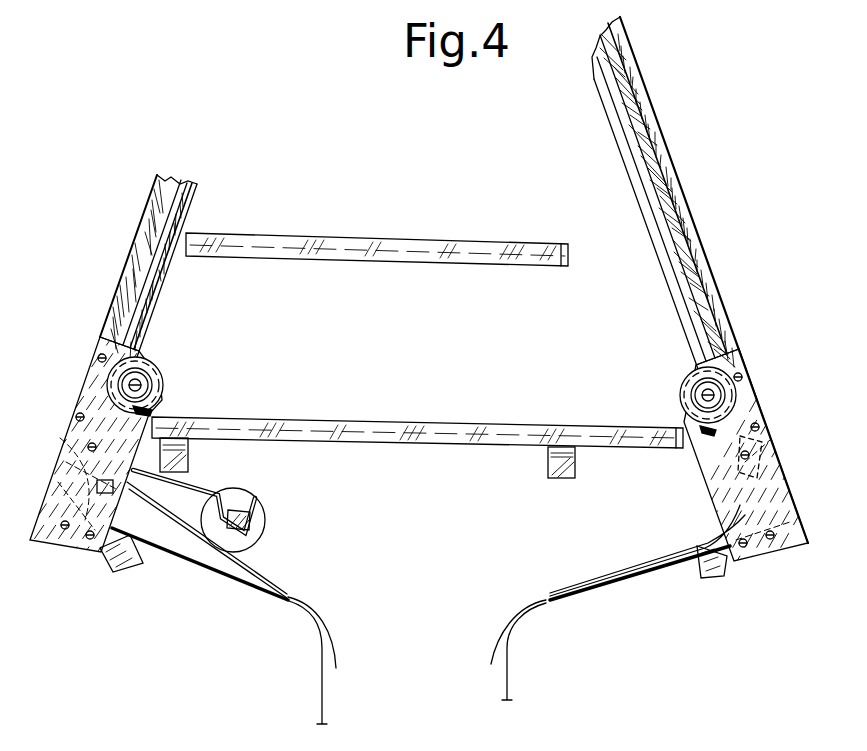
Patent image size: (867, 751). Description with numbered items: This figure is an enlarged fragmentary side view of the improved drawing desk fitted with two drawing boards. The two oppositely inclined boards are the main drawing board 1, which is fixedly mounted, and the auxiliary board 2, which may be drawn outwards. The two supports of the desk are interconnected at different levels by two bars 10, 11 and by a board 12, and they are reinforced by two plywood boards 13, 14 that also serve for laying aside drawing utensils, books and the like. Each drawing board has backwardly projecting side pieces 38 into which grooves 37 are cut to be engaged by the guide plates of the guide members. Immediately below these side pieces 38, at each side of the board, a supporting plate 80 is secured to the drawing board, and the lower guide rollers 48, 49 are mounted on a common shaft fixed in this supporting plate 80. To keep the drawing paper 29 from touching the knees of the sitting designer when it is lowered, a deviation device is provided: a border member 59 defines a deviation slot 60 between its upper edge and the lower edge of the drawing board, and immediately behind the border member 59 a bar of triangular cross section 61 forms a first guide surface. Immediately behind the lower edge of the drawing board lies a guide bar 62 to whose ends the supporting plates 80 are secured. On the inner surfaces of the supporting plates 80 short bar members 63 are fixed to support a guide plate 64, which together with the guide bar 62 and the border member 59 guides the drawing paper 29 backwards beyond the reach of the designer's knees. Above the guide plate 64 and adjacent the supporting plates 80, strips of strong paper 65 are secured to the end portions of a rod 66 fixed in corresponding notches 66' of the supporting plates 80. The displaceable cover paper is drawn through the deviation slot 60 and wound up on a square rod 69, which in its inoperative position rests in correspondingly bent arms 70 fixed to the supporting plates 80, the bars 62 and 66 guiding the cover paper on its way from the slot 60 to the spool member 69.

The main drawing board 1 is at (115, 318).
The auxiliary board 2 is at (658, 163).
The bar 10 is at (182, 455).
The bar 11 is at (557, 480).
The board 12 is at (520, 268).
The plywood board 13 is at (307, 248).
The plywood board 14 is at (282, 418).
The drawing paper 29 is at (125, 265).
The grooves 37 is at (152, 277).
The backwardly projecting side pieces 38 is at (132, 303).
The lower guide roller 48 is at (163, 370).
The lower guide roller 49 is at (421, 390).
The border member 59 is at (768, 452).
The deviation slot 60 is at (772, 477).
The bar of triangular cross section 61 is at (778, 503).
The guide bar 62 is at (77, 435).
The short bar members 63 is at (122, 557).
The guide plate 64 is at (225, 575).
The strips of strong paper 65 is at (325, 623).
The rod 66 is at (206, 499).
The notches 66' is at (105, 486).
The square rod 69 is at (250, 518).
The bent arms 70 is at (255, 485).
The supporting plate 80 is at (168, 408).